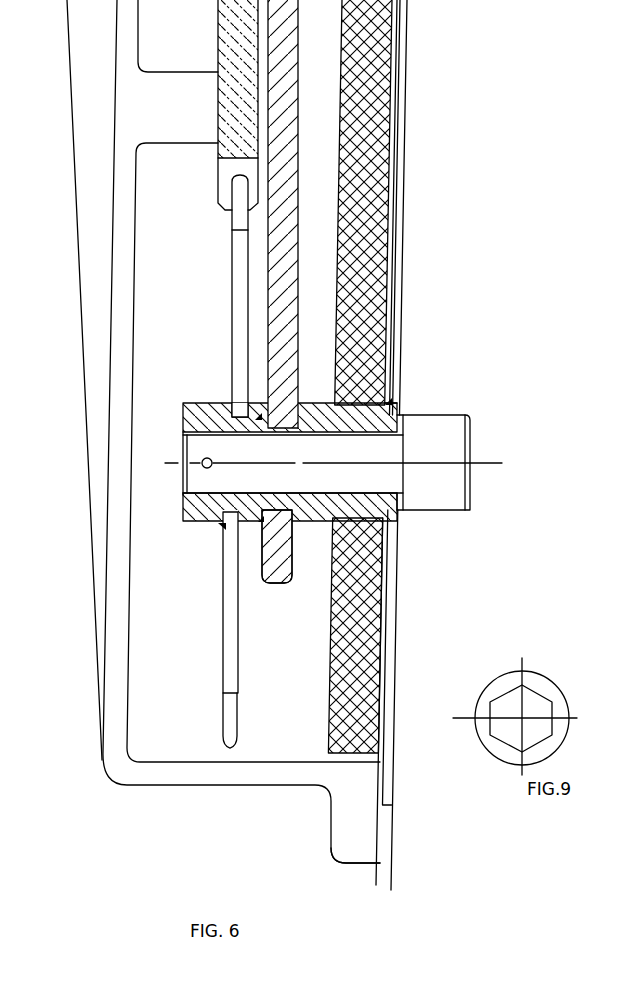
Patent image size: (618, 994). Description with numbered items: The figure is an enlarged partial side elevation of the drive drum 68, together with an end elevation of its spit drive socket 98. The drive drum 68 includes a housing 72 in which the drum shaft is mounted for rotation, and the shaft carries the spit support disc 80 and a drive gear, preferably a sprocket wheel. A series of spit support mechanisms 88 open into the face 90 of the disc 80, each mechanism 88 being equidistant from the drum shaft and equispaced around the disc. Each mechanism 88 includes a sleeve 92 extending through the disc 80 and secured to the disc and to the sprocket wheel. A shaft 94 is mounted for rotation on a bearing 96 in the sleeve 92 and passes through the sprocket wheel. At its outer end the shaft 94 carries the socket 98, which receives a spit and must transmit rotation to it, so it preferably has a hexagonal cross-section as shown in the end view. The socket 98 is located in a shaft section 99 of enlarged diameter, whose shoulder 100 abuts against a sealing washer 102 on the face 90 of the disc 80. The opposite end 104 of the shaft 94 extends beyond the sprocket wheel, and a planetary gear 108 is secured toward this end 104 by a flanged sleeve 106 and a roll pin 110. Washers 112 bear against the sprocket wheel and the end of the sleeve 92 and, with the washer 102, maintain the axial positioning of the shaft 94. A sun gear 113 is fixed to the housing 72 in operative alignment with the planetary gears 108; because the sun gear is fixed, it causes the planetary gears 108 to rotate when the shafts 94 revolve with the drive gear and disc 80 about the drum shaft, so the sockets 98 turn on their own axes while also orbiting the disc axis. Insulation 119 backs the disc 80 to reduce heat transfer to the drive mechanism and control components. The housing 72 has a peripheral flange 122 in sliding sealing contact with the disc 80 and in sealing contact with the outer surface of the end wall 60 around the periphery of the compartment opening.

In FIG. 6, the end 60 is at (383, 873).
In FIG. 6, the drive drum 68 is at (428, 20).
In FIG. 6, the housing 72 is at (120, 653).
In FIG. 6, the spit support disc 80 is at (401, 78).
In FIG. 6, the spit support mechanism 88 is at (490, 415).
In FIG. 6, the face 90 is at (408, 122).
In FIG. 6, the sleeve 92 is at (401, 399).
In FIG. 6, the shaft 94 is at (397, 510).
In FIG. 6, the bearing 96 is at (311, 523).
In FIG. 9, the socket 98 is at (508, 708).
In FIG. 6, the shaft section of enlarged diameter 99 is at (443, 480).
In FIG. 6, the shoulder 100 is at (400, 503).
In FIG. 6, the sealing washer 102 is at (405, 425).
In FIG. 6, the opposite end 104 is at (198, 478).
In FIG. 6, the flanged sleeve 106 is at (180, 510).
In FIG. 6, the planetary gear 108 is at (222, 615).
In FIG. 6, the roll pin 110 is at (180, 458).
In FIG. 6, the washer 112 is at (224, 396).
In FIG. 6, the sun gear 113 is at (237, 25).
In FIG. 6, the insulation 119 is at (355, 643).
In FIG. 6, the peripheral flange 122 is at (358, 828).